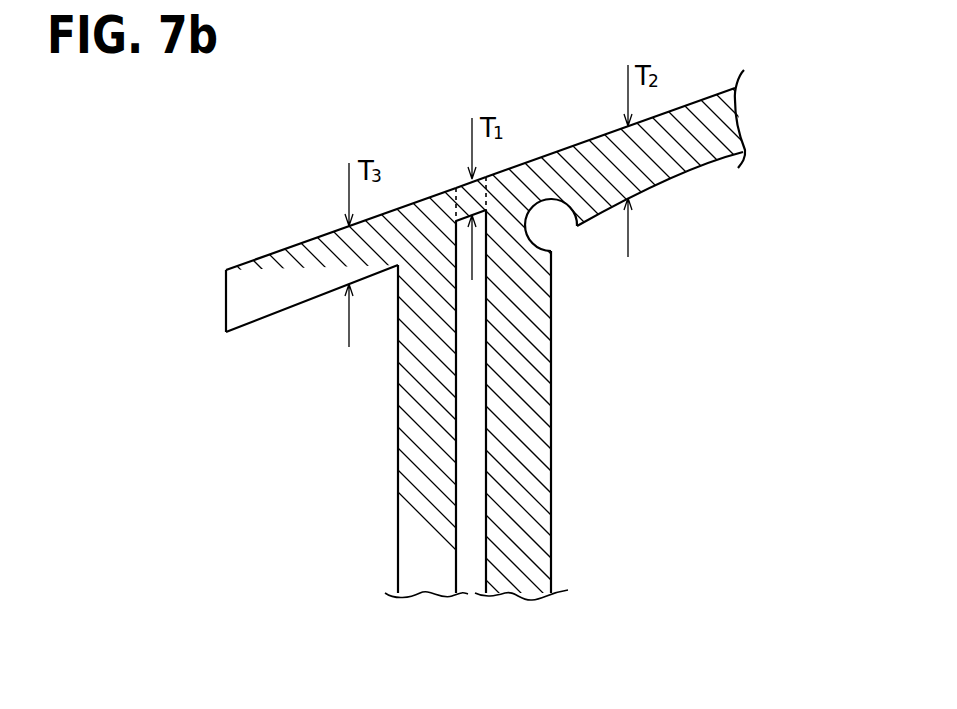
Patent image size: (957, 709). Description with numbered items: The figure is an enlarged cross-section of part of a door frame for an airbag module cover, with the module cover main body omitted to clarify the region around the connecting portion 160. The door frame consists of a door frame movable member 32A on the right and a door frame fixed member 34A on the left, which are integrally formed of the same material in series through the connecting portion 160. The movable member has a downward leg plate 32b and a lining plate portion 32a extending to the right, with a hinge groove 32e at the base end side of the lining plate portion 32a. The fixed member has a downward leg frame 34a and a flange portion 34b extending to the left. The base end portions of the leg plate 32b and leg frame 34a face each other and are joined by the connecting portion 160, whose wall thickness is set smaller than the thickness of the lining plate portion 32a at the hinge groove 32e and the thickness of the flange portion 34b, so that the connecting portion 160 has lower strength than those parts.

The door frame fixed member 34A is at (217, 252).
The door frame movable member 32A is at (725, 67).
The leg frame 34a is at (398, 513).
The flange portion 34b is at (302, 305).
The lining plate portion 32a is at (673, 178).
The leg plate 32b is at (551, 533).
The hinge groove 32e is at (552, 223).
The connecting portion 160 is at (463, 182).